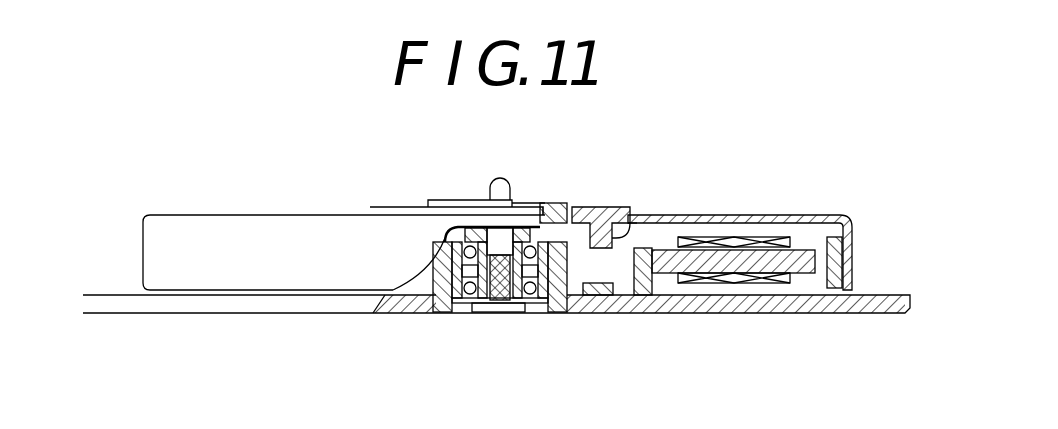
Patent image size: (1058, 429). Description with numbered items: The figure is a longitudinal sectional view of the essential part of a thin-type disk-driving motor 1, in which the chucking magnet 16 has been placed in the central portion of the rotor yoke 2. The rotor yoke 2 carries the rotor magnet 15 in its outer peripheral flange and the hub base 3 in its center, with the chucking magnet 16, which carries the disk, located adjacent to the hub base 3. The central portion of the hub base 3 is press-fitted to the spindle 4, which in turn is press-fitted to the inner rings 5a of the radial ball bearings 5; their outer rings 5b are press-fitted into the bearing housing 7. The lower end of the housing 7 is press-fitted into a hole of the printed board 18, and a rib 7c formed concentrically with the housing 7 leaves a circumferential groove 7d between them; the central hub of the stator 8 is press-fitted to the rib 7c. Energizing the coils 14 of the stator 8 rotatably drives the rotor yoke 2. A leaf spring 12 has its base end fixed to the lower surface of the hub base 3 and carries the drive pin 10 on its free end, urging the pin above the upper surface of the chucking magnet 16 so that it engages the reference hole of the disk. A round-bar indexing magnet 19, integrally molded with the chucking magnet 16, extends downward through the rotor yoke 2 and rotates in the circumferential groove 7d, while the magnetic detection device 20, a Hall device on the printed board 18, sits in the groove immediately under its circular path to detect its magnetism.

The motor 1 is at (248, 210).
The rotor yoke 2 is at (762, 215).
The hub base 3 is at (437, 212).
The spindle 4 is at (495, 186).
The radial ball bearings 5 is at (535, 316).
The inner rings 5a is at (472, 313).
The outer rings 5b is at (460, 304).
The bearing housing 7 is at (418, 268).
The rib 7c is at (643, 295).
The circumferential groove 7d is at (591, 268).
The stator 8 is at (800, 240).
The drive pin 10 is at (513, 205).
The leaf spring 12 is at (458, 212).
The coils 14 is at (730, 237).
The rotor magnet 15 is at (840, 264).
The chucking magnet 16 is at (588, 207).
The printed board 18 is at (788, 313).
The indexing magnet 19 is at (637, 215).
The magnetic detection device 20 is at (602, 295).